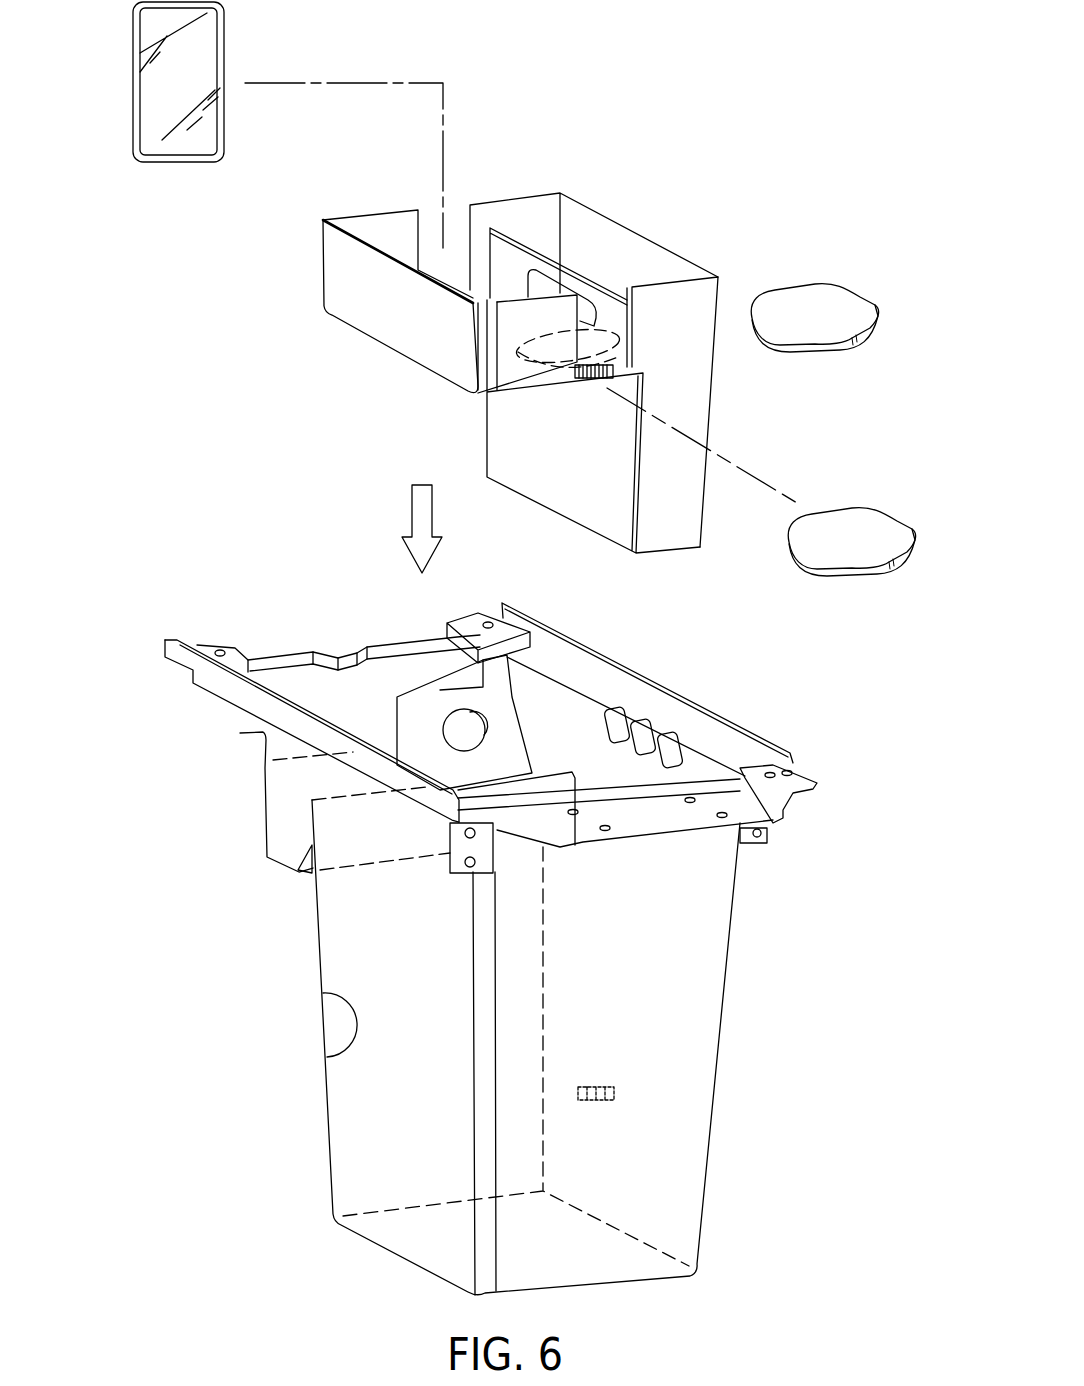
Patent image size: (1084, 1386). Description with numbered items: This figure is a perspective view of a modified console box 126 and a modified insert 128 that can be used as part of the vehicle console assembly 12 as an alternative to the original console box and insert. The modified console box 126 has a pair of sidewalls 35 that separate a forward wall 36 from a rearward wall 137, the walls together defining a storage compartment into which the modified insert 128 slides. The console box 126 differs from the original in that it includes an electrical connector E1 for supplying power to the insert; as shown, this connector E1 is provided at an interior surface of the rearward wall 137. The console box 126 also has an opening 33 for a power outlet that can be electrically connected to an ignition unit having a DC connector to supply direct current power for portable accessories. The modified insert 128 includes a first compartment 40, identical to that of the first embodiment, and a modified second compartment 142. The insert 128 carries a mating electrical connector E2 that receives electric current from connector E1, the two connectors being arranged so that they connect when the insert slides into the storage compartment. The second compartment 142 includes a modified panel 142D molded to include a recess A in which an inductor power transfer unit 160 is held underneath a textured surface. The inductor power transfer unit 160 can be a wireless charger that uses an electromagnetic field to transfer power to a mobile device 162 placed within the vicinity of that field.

The vehicle console assembly 12 is at (584, 298).
The opening 33 is at (486, 729).
The sidewalls 35 is at (324, 1052).
The forward wall 36 is at (518, 988).
The first compartment 40 is at (638, 212).
The modified console box 126 is at (491, 738).
The modified insert 128 is at (543, 142).
The rearward wall 137 is at (486, 1137).
The modified second compartment 142 is at (357, 198).
The modified panel 142D is at (485, 297).
The inductor power transfer unit 160 is at (883, 506).
The mobile device 162 is at (176, 165).
The recess A is at (603, 342).
The electrical connector E1 is at (598, 1103).
The electrical connector E2 is at (590, 382).